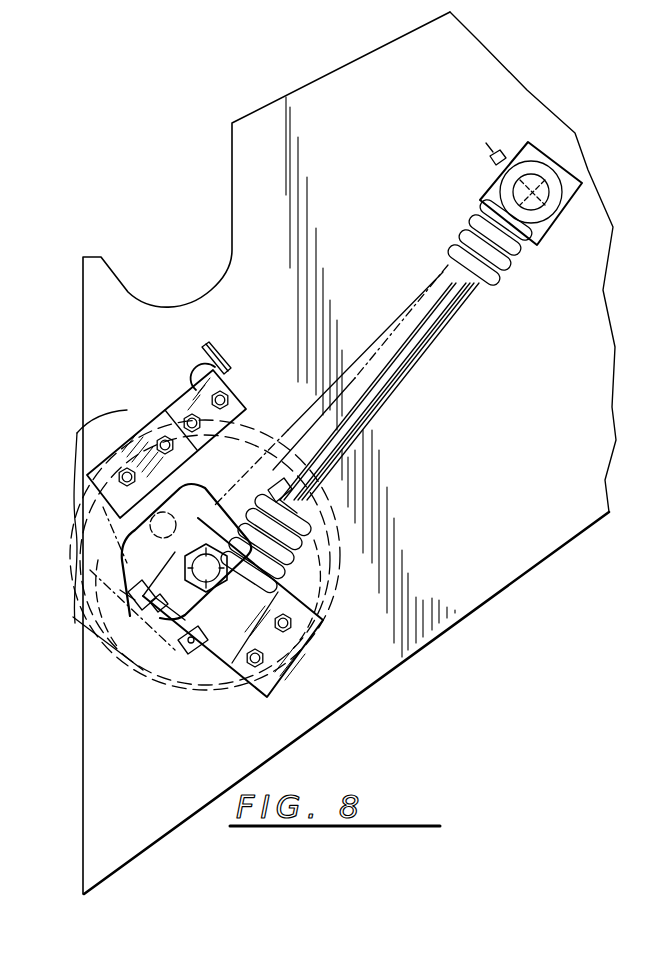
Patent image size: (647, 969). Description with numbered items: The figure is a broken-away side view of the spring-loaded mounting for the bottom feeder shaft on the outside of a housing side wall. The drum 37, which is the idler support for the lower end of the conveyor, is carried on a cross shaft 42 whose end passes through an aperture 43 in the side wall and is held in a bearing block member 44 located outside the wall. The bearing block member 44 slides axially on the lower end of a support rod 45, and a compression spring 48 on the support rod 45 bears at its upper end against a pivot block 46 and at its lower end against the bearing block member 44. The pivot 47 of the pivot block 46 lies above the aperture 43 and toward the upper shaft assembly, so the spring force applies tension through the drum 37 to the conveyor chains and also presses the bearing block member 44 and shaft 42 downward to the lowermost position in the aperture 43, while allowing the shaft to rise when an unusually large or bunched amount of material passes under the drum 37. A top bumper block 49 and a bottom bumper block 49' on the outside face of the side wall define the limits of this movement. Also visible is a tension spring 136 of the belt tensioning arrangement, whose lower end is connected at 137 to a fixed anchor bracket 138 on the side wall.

The drum 37 is at (250, 438).
The cross shaft 42 is at (178, 606).
The aperture 43 is at (201, 494).
The bearing block member 44 is at (150, 607).
The support rod 45 is at (390, 382).
The pivot block 46 is at (531, 146).
The pivot 47 is at (546, 190).
The compression spring 48 is at (516, 266).
The top bumper block 49 is at (166, 444).
The bottom bumper block 49' is at (233, 625).
The tension spring 136 is at (220, 355).
The connection 137 is at (190, 380).
The anchor bracket 138 is at (183, 393).